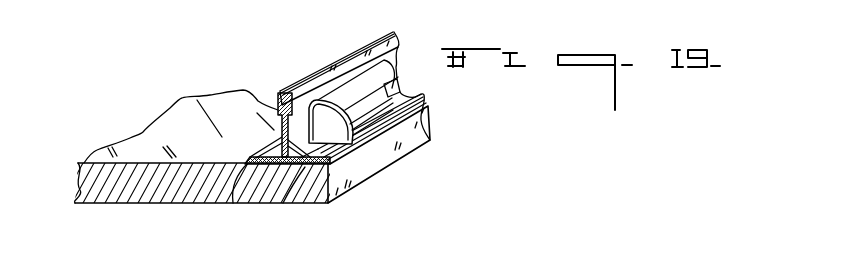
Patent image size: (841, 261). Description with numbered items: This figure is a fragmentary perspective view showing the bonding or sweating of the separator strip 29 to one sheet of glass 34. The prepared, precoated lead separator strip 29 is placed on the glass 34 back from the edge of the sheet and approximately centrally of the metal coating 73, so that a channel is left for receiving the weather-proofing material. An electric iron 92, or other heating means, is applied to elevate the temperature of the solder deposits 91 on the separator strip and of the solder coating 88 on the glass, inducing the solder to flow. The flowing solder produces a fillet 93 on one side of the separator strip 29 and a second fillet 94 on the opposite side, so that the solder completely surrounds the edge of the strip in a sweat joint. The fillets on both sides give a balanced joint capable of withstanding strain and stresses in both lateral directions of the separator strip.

The glass 34 is at (80, 167).
The metal coating 73 is at (233, 203).
The solder coating 88 is at (290, 202).
The second fillet 94 is at (259, 150).
The fillet 93 is at (300, 97).
The solder deposits 91 is at (401, 25).
The electric iron 92 is at (377, 127).
The separator strip 29 is at (266, 106).